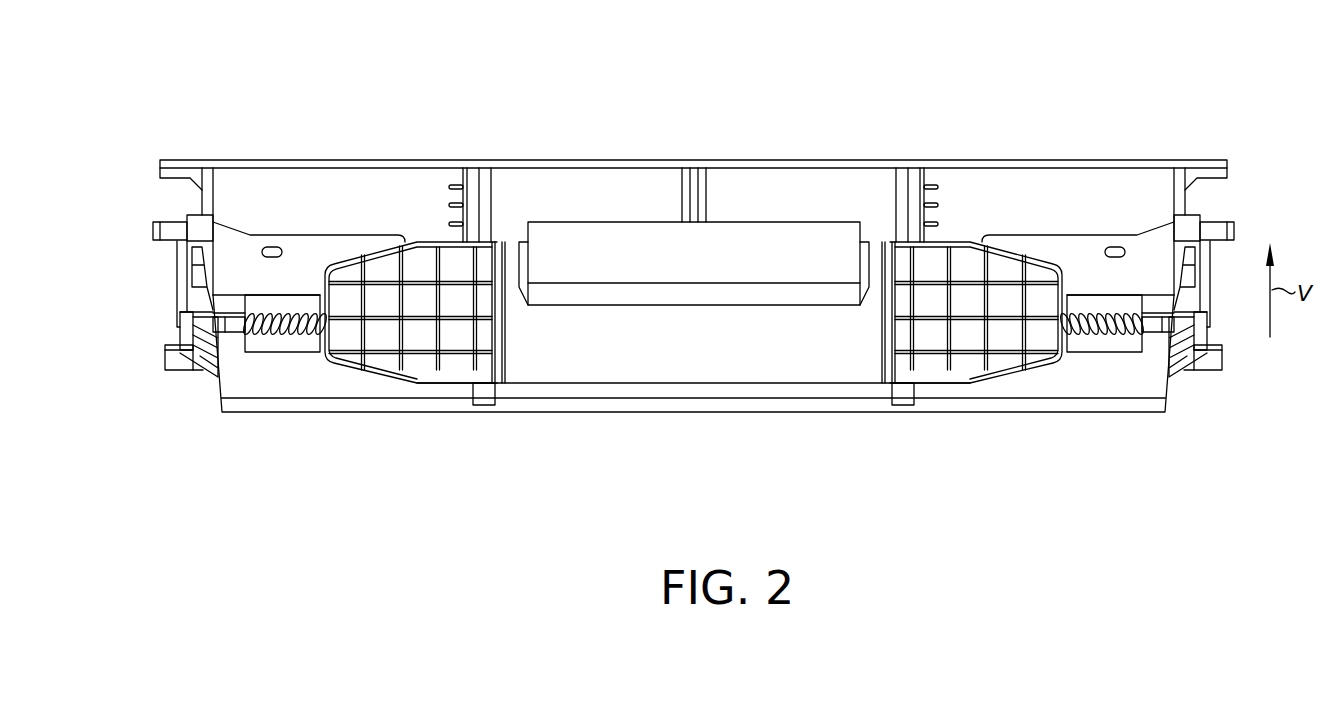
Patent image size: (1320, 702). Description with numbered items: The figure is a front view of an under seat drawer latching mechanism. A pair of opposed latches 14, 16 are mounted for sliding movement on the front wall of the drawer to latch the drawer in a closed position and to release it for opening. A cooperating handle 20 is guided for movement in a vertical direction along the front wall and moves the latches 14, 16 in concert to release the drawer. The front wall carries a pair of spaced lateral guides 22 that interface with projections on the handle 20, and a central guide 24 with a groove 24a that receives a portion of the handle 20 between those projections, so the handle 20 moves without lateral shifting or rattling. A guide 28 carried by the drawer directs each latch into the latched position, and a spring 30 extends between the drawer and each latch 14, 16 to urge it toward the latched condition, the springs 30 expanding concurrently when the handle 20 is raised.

The latch 14 is at (303, 250).
The latch 16 is at (1083, 248).
The handle 20 is at (737, 337).
The lateral guide 22 is at (473, 190).
The central guide 24 is at (662, 128).
The groove 24a is at (702, 183).
The guide 28 is at (173, 229).
The spring 30 is at (289, 330).